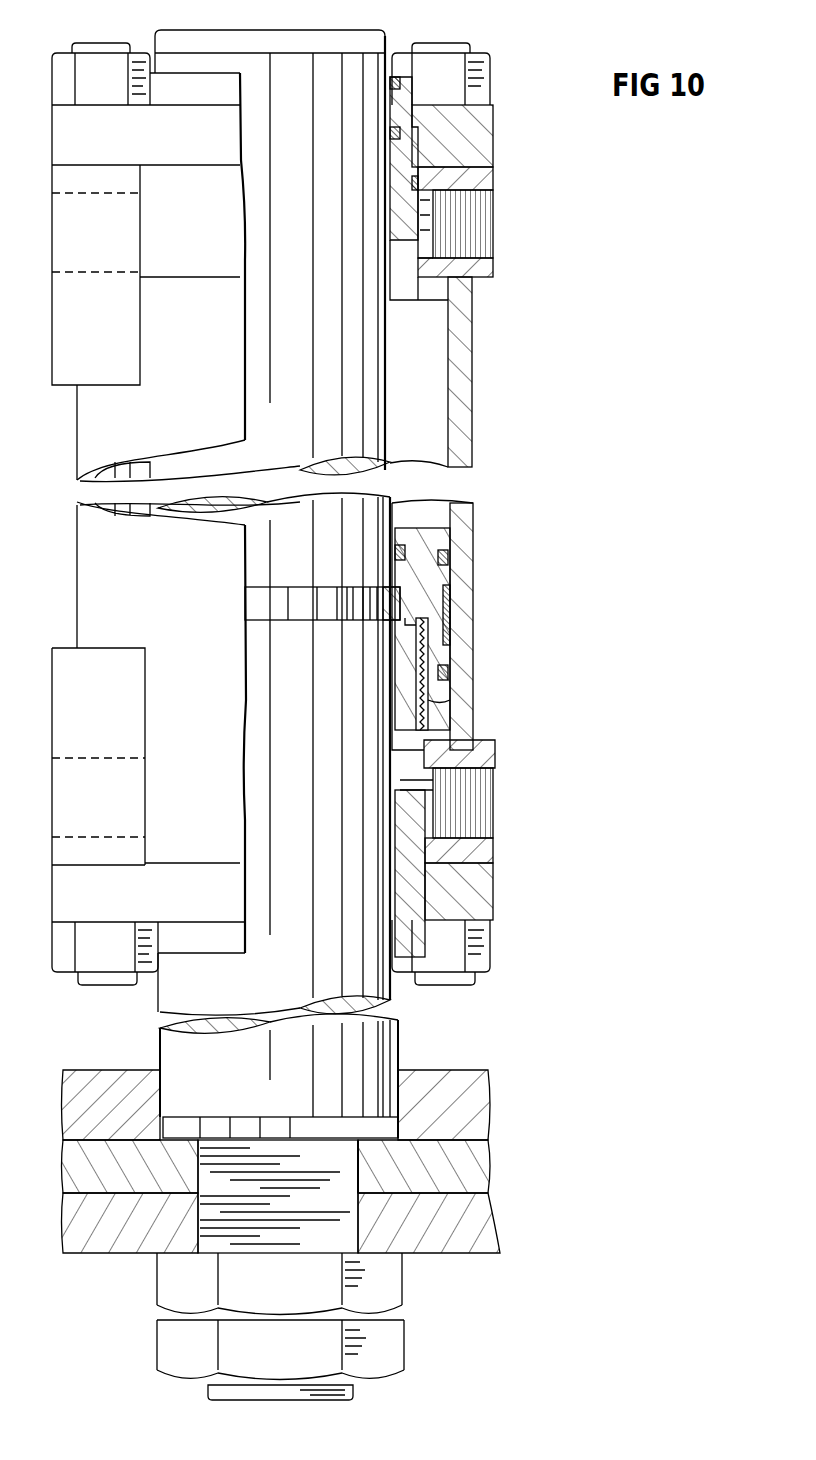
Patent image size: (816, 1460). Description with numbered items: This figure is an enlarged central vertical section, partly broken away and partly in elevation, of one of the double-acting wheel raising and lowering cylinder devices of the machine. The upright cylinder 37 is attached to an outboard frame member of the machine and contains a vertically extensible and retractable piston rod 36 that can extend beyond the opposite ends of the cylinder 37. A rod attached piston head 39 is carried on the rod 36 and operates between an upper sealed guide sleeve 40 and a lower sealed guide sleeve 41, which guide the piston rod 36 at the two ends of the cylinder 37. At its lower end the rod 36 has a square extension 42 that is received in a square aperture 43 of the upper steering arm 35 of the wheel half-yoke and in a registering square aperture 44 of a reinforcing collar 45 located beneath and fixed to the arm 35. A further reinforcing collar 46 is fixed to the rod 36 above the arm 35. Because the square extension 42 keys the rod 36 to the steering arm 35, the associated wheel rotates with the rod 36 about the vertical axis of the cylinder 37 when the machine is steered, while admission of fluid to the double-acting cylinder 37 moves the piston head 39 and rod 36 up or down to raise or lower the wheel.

The upper steering arm 35 is at (458, 1172).
The piston rod 36 is at (167, 43).
The double-acting raising and lowering cylinder 37 is at (460, 411).
The piston head 39 is at (420, 540).
The sealed guide sleeve 40 is at (403, 157).
The sealed guide sleeve 41 is at (415, 880).
The square extension 42 is at (318, 1212).
The square aperture 43 is at (355, 1178).
The square aperture 44 is at (355, 1228).
The reinforcing collar 45 is at (462, 1232).
The reinforcing collar 46 is at (460, 1083).